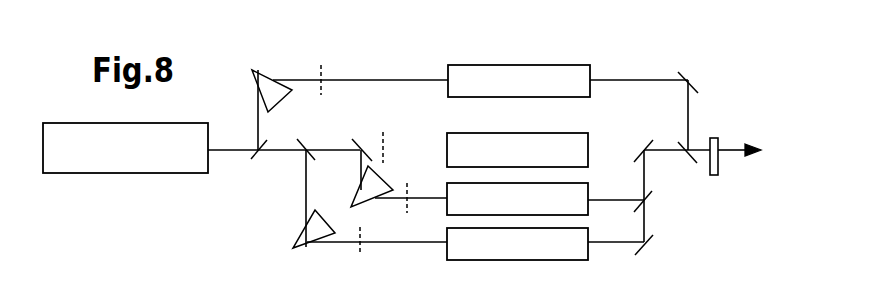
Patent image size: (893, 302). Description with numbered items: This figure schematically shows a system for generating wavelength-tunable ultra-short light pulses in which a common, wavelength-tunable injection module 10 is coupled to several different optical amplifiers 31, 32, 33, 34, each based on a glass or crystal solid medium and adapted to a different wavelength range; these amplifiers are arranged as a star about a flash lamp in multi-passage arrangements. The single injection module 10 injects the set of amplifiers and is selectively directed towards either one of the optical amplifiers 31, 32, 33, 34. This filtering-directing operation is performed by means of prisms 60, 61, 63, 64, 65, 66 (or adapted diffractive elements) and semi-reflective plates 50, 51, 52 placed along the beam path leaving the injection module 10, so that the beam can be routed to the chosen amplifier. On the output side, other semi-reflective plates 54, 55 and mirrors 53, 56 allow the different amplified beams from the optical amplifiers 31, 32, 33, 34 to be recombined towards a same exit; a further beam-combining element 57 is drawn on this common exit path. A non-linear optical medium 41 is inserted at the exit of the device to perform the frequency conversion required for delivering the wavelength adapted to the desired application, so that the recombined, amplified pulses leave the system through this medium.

The injection module 10 is at (130, 160).
The optical amplifier 31 is at (506, 92).
The optical amplifier 32 is at (504, 161).
The optical amplifier 33 is at (504, 210).
The optical amplifier 34 is at (504, 255).
The non-linear optical medium 41 is at (720, 163).
The semi-reflective plate 50 is at (258, 162).
The semi-reflective plate 51 is at (299, 135).
The semi-reflective plate 52 is at (354, 138).
The mirror 53 is at (644, 248).
The semi-reflective plate 54 is at (648, 193).
The semi-reflective plate 55 is at (648, 142).
The mirror 56 is at (686, 72).
The beam combiner 57 is at (684, 163).
The prism 60 is at (263, 68).
The prism 61 is at (352, 200).
The prism 63 is at (322, 70).
The prism 64 is at (385, 142).
The prism 65 is at (407, 188).
The prism 66 is at (360, 257).